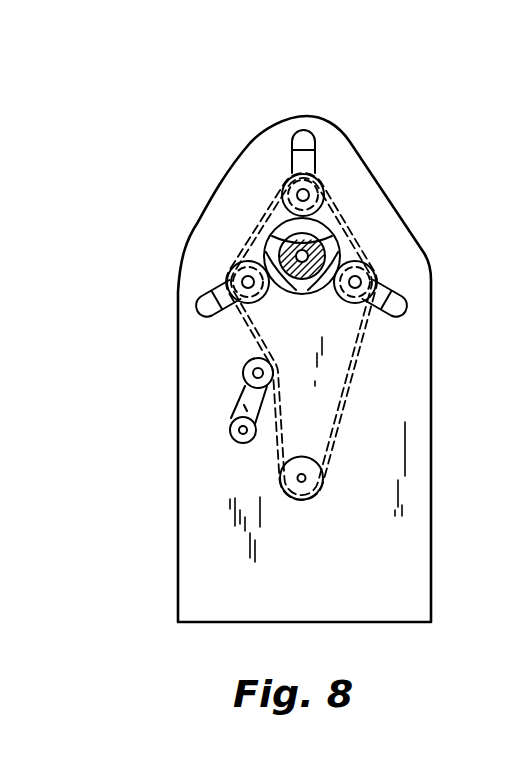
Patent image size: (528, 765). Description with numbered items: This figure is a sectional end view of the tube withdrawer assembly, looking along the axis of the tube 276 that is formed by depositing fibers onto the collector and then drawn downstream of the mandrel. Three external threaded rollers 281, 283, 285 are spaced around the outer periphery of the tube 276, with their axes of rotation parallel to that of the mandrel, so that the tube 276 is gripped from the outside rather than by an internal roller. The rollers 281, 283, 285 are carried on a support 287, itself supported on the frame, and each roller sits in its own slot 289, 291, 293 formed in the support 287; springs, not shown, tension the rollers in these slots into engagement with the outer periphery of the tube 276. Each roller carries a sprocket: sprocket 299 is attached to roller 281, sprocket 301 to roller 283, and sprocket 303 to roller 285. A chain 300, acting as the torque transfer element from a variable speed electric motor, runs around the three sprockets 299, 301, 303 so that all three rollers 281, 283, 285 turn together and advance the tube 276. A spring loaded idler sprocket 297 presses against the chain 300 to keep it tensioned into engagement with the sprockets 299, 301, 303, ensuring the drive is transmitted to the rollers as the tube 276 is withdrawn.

The support 287 is at (422, 500).
The slot 289 is at (304, 129).
The external threaded roller 281 is at (318, 177).
The sprocket 301 is at (238, 266).
The sprocket 303 is at (373, 264).
The slot 291 is at (200, 305).
The slot 293 is at (404, 300).
The tube 276 is at (321, 222).
The external threaded roller 283 is at (270, 229).
The external threaded roller 285 is at (337, 254).
The sprocket 299 is at (324, 186).
The chain 300 is at (350, 385).
The spring loaded idler sprocket 297 is at (243, 372).